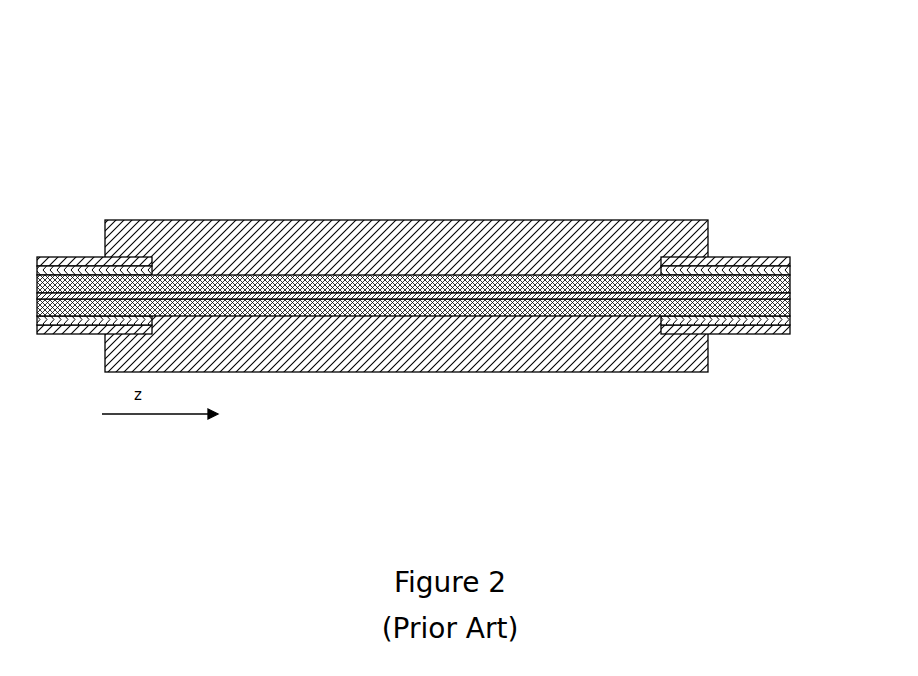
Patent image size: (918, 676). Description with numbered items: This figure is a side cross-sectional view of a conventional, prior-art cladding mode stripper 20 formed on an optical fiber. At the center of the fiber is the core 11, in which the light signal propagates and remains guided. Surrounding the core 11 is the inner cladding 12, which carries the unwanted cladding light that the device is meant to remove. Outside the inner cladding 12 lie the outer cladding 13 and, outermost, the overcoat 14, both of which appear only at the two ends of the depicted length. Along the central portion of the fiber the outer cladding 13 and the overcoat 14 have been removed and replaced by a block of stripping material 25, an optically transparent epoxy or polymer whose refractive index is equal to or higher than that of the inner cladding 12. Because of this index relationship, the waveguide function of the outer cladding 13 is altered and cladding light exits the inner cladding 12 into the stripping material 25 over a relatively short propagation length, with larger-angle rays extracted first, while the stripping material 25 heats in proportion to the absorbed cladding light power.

The cladding mode stripper 20 is at (453, 250).
The stripping material 25 is at (445, 242).
The overcoat 14 is at (790, 260).
The outer cladding 13 is at (790, 270).
The inner cladding 12 is at (468, 305).
The core 11 is at (383, 293).